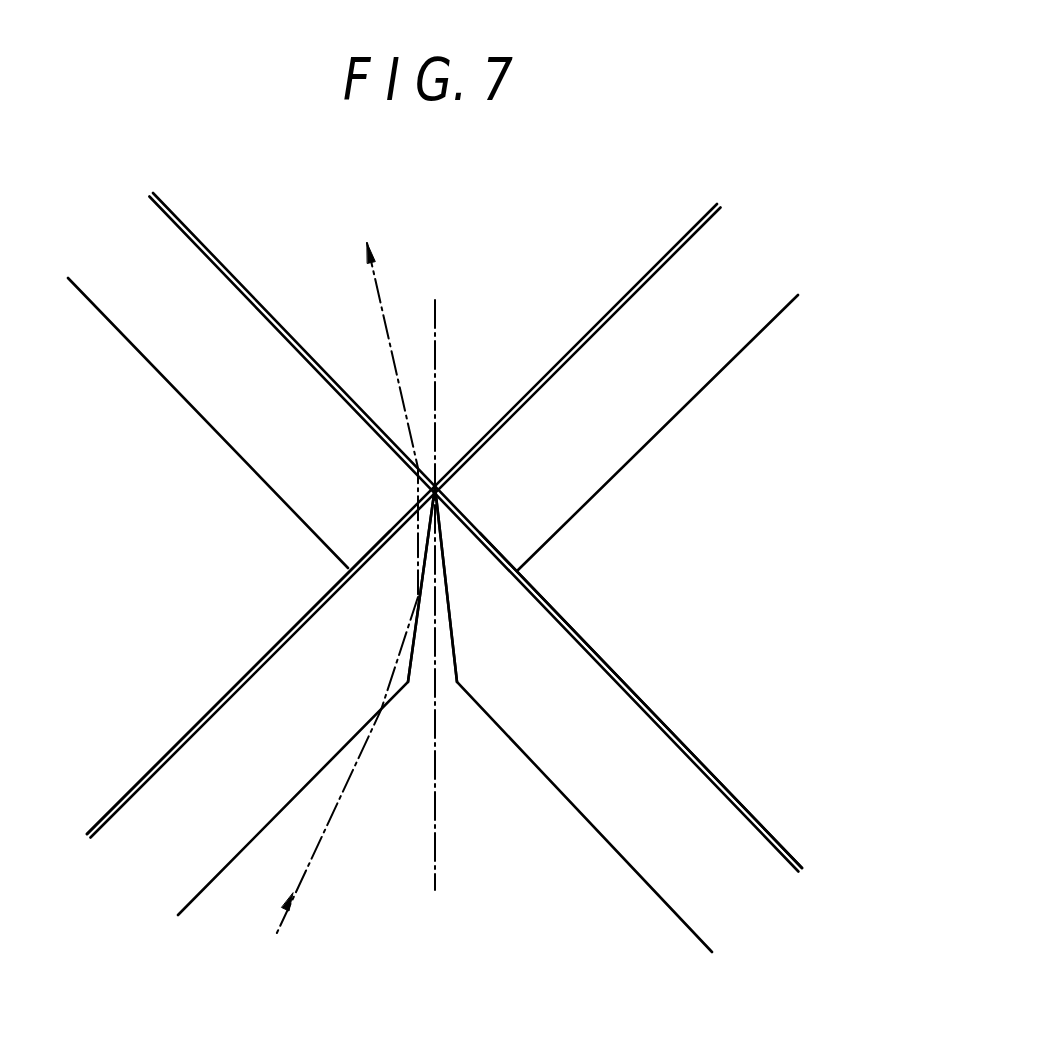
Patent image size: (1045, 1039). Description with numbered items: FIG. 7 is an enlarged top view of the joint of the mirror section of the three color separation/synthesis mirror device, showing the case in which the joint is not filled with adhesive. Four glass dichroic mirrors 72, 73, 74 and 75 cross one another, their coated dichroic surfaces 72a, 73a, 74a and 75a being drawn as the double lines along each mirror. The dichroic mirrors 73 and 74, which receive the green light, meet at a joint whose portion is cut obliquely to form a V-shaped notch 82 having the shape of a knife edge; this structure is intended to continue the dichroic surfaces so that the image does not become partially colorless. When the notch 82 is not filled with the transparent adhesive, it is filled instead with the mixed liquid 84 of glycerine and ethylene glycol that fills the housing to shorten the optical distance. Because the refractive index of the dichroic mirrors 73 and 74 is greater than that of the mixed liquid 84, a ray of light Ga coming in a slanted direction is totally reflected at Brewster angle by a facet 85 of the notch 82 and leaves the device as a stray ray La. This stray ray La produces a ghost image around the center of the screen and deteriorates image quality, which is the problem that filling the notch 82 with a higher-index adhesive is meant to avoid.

The dichroic mirror 72 is at (249, 466).
The first surface 72a is at (271, 314).
The dichroic mirror 73 is at (197, 897).
The second surface 73a is at (236, 685).
The dichroic mirror 74 is at (648, 887).
The third surface 74a is at (583, 640).
The dichroic mirror 75 is at (679, 414).
The fourth surface 75a is at (592, 328).
The V-shaped notch 82 is at (446, 690).
The mixed liquid 84 is at (436, 619).
The facet 85 is at (410, 657).
The stray ray La is at (392, 420).
The ray of light Ga is at (346, 775).